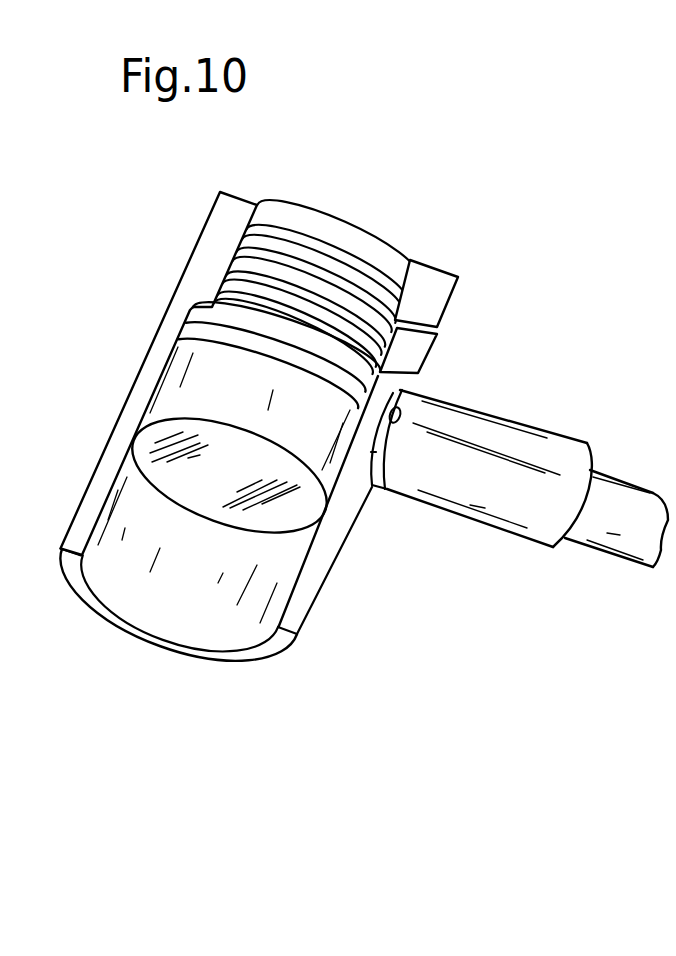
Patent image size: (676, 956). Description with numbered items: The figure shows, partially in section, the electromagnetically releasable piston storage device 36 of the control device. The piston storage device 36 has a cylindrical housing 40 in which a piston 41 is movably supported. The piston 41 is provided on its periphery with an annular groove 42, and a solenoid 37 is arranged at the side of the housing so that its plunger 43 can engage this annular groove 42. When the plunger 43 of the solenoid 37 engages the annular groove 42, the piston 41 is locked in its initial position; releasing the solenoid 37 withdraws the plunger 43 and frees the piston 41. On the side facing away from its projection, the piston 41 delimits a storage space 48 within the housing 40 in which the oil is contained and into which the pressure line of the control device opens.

The piston storage device 36 is at (410, 173).
The solenoid 37 is at (505, 443).
The cylindrical housing 40 is at (143, 385).
The piston 41 is at (317, 420).
The annular groove 42 is at (210, 333).
The plunger 43 is at (368, 490).
The storage space 48 is at (147, 582).